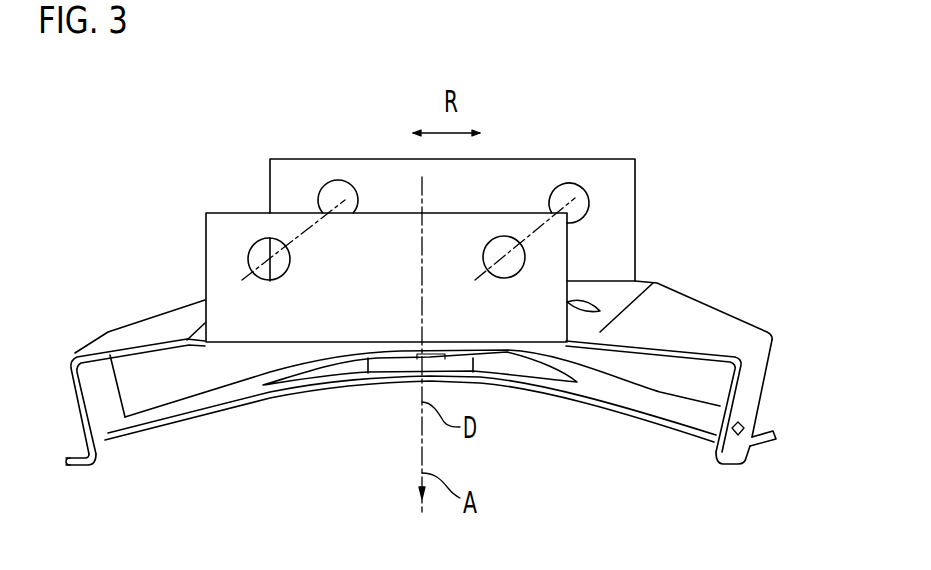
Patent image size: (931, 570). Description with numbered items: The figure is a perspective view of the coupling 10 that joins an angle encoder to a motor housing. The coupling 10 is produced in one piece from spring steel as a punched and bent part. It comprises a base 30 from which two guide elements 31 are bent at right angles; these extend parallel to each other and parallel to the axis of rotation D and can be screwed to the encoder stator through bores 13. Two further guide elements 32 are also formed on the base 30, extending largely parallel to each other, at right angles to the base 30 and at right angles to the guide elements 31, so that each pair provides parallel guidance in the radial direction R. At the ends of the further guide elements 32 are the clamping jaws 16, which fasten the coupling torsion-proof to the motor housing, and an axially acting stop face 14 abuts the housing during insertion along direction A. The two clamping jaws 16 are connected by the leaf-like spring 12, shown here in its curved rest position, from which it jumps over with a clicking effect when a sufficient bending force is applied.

The coupling 10 is at (735, 263).
The spring 12 is at (622, 394).
The bores 13 is at (567, 194).
The stop face 14 is at (82, 465).
The clamping jaws 16 is at (67, 458).
The base 30 is at (632, 288).
The guide elements 31 is at (231, 262).
The further guide elements 32 is at (97, 405).